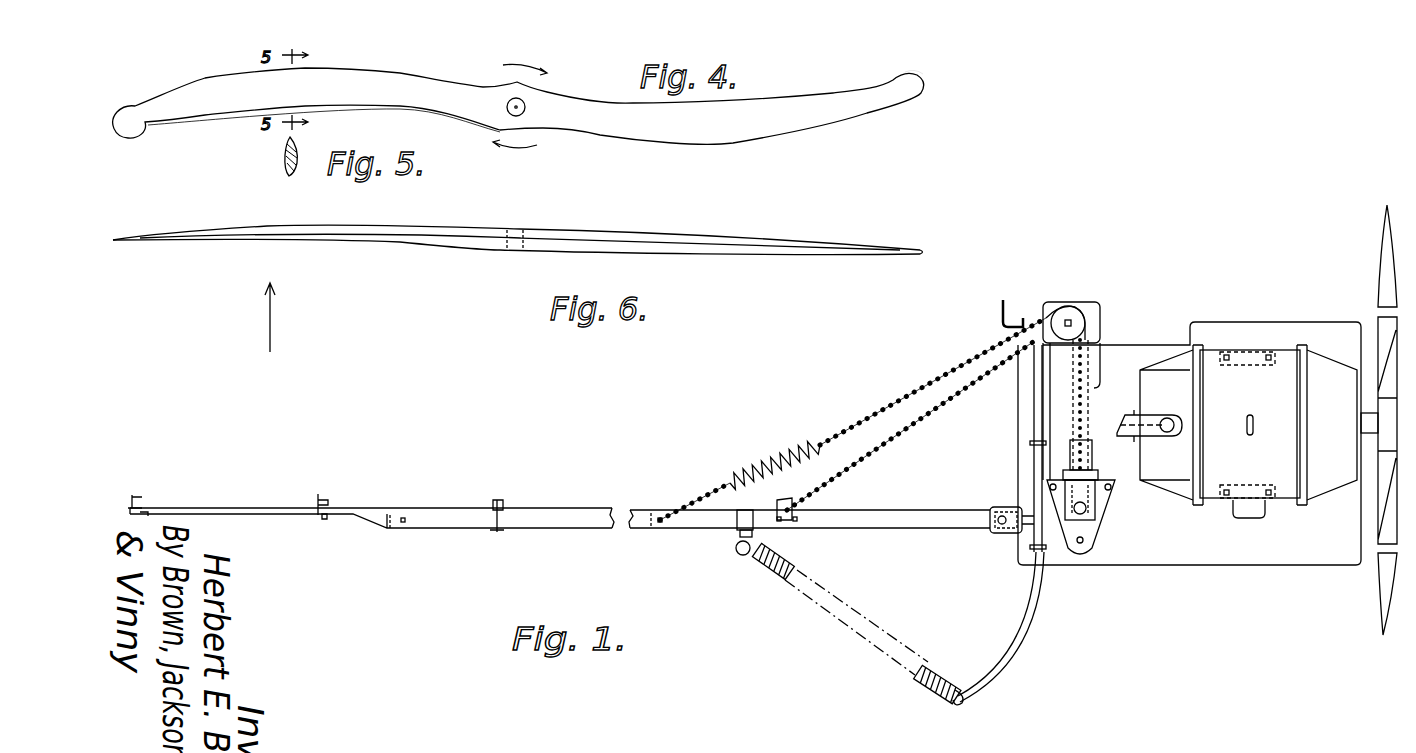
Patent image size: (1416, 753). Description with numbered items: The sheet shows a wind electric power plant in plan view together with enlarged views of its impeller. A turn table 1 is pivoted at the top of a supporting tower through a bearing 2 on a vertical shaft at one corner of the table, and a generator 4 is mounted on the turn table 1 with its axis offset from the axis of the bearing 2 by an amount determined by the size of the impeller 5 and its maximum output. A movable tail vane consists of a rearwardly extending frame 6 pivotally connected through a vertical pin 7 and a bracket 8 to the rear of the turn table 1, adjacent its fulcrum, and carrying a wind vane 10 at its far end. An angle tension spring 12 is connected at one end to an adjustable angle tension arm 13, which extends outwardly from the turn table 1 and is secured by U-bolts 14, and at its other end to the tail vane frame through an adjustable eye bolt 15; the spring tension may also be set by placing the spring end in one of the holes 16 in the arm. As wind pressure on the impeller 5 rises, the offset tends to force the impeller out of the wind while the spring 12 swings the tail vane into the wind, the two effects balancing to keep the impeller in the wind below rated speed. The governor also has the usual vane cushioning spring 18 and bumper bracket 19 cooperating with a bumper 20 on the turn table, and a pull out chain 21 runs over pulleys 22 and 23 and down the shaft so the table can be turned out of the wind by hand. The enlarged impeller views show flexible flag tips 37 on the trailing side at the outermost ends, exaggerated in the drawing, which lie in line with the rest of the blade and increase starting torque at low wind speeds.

In FIG. 1, the turn table 1 is at (1280, 547).
In FIG. 1, the bearing 2 is at (1098, 540).
In FIG. 1, the generator 4 is at (1218, 483).
In FIG. 4, the impeller 5 is at (722, 130).
In FIG. 6, the impeller 5 is at (722, 233).
In FIG. 1, the impeller 5 is at (1380, 258).
In FIG. 1, the frame 6 is at (906, 516).
In FIG. 1, the vertical pin 7 is at (1000, 508).
In FIG. 1, the bracket 8 is at (1000, 530).
In FIG. 1, the wind vane 10 is at (248, 508).
In FIG. 1, the angle tension spring 12 is at (932, 693).
In FIG. 1, the adjustable angle tension arm 13 is at (1022, 641).
In FIG. 1, the U-bolts 14 is at (1030, 560).
In FIG. 1, the adjustable eye bolt 15 is at (741, 556).
In FIG. 1, the holes 16 is at (968, 700).
In FIG. 1, the vane cushioning spring 18 is at (778, 463).
In FIG. 1, the bumper bracket 19 is at (784, 505).
In FIG. 1, the bumper 20 is at (1000, 318).
In FIG. 1, the pull out chain 21 is at (886, 440).
In FIG. 1, the pulley 22 is at (1092, 333).
In FIG. 1, the pulley 23 is at (1097, 503).
In FIG. 4, the flag tips 37 is at (920, 90).